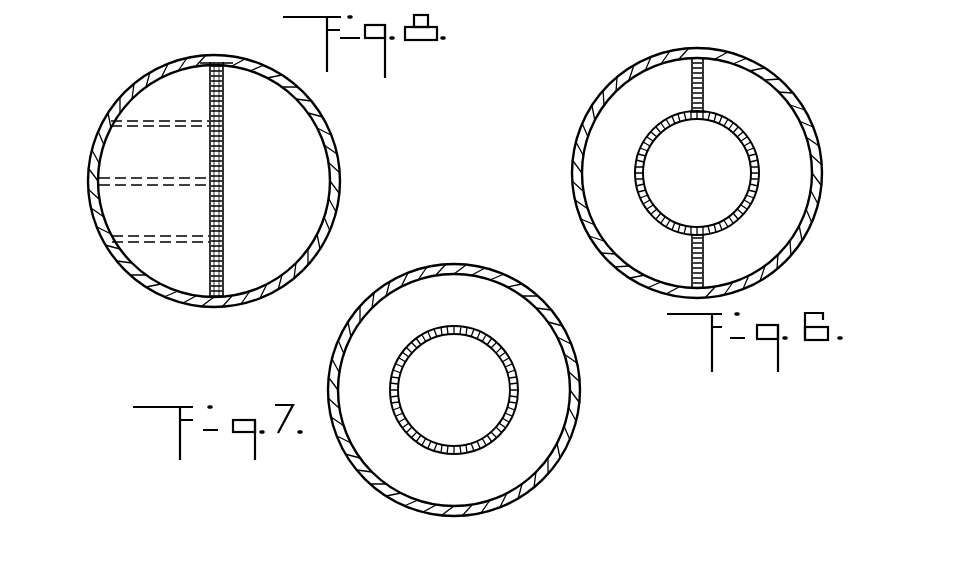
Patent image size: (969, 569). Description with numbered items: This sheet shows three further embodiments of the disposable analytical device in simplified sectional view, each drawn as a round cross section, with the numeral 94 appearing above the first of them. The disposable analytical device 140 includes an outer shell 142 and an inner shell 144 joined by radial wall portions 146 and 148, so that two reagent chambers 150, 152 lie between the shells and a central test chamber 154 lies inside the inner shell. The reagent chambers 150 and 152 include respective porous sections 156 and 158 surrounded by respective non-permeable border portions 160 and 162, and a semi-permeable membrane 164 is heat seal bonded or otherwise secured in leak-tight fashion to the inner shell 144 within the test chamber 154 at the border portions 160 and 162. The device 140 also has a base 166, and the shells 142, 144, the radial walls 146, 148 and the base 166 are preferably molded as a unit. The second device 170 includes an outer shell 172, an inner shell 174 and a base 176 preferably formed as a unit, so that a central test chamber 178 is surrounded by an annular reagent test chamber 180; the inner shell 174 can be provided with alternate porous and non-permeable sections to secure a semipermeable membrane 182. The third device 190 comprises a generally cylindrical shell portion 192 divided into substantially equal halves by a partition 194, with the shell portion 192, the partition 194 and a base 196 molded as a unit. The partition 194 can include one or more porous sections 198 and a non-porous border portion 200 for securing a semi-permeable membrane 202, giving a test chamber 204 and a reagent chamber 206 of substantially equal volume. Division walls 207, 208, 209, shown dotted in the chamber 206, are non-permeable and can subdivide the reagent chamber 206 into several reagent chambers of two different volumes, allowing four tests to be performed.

In FIG. 6, the conduit section 94 is at (646, 13).
In FIG. 6, the disposable analytical device 140 is at (730, 149).
In FIG. 6, the outer shell 142 is at (818, 127).
In FIG. 6, the inner shell 144 is at (706, 114).
In FIG. 6, the radial wall portion 146 is at (691, 90).
In FIG. 6, the radial wall portion 148 is at (691, 268).
In FIG. 6, the reagent chamber 150 is at (810, 186).
In FIG. 6, the reagent chamber 152 is at (622, 186).
In FIG. 6, the central test chamber 154 is at (715, 208).
In FIG. 6, the porous section 156 is at (772, 134).
In FIG. 6, the porous section 158 is at (650, 131).
In FIG. 6, the non-permeable border portion 160 is at (710, 237).
In FIG. 6, the non-permeable border portion 162 is at (678, 237).
In FIG. 6, the semi-permeable membrane 164 is at (660, 133).
In FIG. 6, the base 166 is at (787, 220).
In FIG. 7, the disposable analytical device 170 is at (500, 394).
In FIG. 7, the outer shell 172 is at (578, 418).
In FIG. 7, the inner shell 174 is at (513, 422).
In FIG. 7, the base 176 is at (533, 460).
In FIG. 7, the central test chamber 178 is at (478, 383).
In FIG. 7, the reagent test chamber 180 is at (555, 368).
In FIG. 7, the semipermeable membrane 182 is at (417, 428).
In FIG. 8, the disposable analytical device 190 is at (228, 169).
In FIG. 8, the cylindrical shell portion 192 is at (338, 188).
In FIG. 8, the partition 194 is at (210, 103).
In FIG. 8, the base 196 is at (300, 233).
In FIG. 8, the porous section 198 is at (210, 155).
In FIG. 8, the non-porous border portion 200 is at (183, 72).
In FIG. 8, the semi-permeable membrane 202 is at (224, 143).
In FIG. 8, the test chamber 204 is at (300, 203).
In FIG. 8, the reagent chamber 206 is at (190, 218).
In FIG. 8, the division wall 207 is at (120, 122).
In FIG. 8, the division wall 208 is at (120, 186).
In FIG. 8, the division wall 209 is at (132, 243).